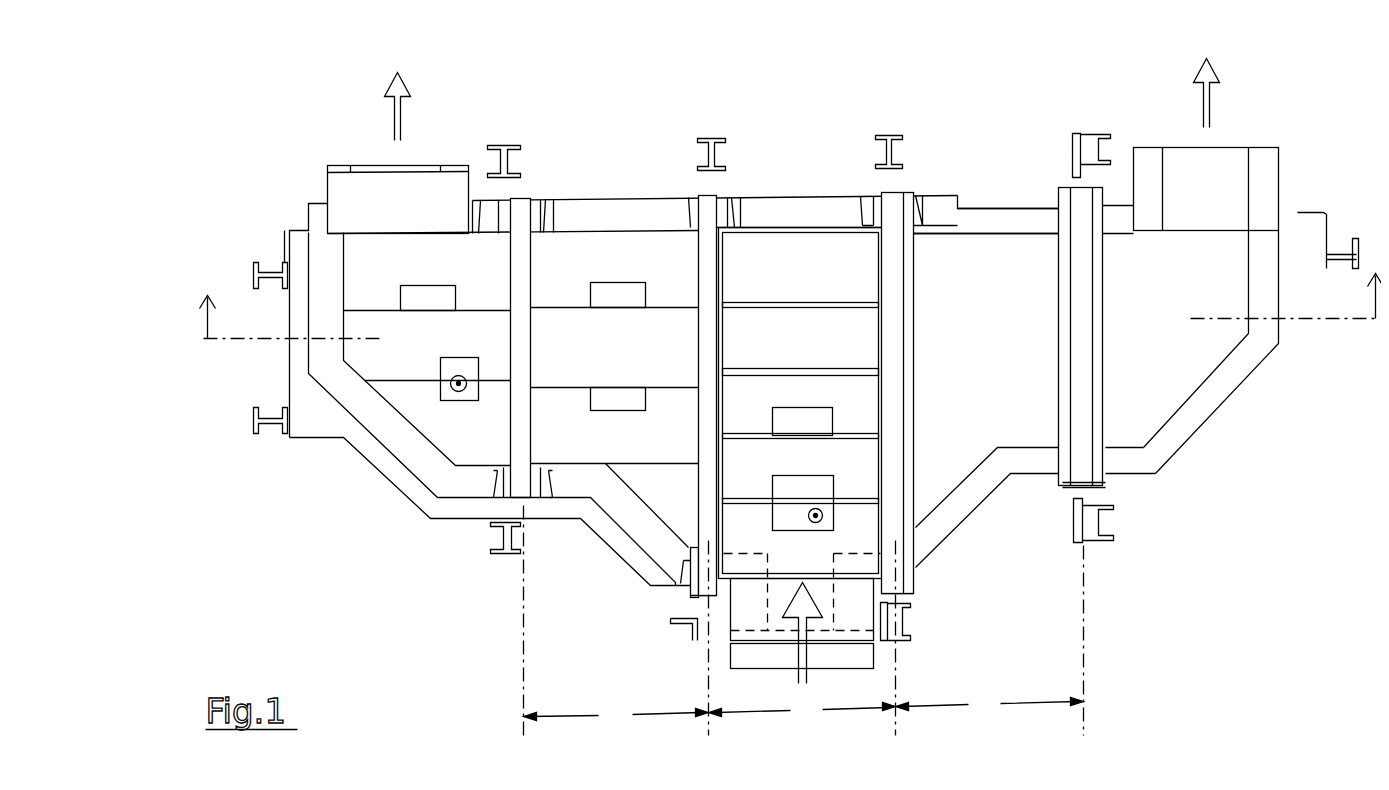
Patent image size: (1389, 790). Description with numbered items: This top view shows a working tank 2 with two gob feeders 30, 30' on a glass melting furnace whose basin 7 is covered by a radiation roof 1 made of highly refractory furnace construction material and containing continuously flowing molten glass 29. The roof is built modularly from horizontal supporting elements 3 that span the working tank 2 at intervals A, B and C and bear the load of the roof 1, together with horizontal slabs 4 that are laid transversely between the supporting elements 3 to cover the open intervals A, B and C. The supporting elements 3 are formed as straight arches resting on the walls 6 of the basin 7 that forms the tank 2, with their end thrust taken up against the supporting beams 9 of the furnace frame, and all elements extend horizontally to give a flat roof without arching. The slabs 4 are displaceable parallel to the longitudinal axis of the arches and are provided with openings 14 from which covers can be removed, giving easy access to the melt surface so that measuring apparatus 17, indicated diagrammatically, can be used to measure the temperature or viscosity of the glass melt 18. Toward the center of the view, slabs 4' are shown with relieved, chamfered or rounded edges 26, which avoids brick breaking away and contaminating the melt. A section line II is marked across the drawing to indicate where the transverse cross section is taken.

The radiation roof 1 is at (615, 348).
The working tank 2 is at (613, 168).
The horizontal supporting elements 3 is at (520, 293).
The horizontal slabs 4 is at (425, 319).
The slabs 4' is at (862, 403).
The walls 6 is at (1172, 435).
The basin 7 is at (963, 240).
The supporting beams 9 is at (496, 144).
The openings 14 is at (418, 300).
The measuring apparatus 17 is at (450, 402).
The glass melt 18 is at (820, 530).
The edges 26 is at (787, 365).
The molten glass 29 is at (828, 655).
The gob feeder 30 is at (398, 162).
The gob feeder 30' is at (1214, 153).
The interval A is at (616, 711).
The interval B is at (802, 709).
The interval C is at (990, 704).
The section line II is at (791, 290).